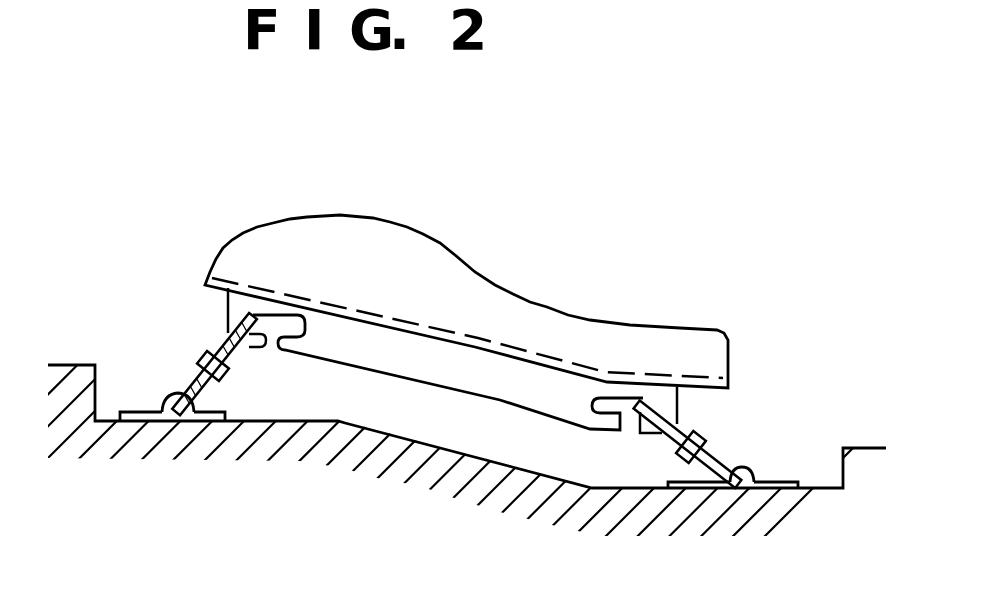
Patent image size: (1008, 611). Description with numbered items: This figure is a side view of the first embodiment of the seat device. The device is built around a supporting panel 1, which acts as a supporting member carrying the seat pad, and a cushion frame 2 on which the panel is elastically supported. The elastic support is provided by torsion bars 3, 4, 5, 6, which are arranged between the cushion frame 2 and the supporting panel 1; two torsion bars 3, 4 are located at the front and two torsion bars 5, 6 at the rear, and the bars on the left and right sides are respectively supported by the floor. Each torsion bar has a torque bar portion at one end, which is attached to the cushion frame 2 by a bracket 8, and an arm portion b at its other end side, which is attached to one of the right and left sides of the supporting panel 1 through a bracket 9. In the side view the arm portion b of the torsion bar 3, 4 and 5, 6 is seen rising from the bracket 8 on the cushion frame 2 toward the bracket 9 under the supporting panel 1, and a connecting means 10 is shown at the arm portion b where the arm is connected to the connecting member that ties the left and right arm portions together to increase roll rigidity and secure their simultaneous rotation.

The supporting panel 1 is at (293, 254).
The cushion frame 2 is at (430, 444).
The torsion bar 3 is at (727, 480).
The torsion bar 4 is at (775, 430).
The torsion bar 5 is at (190, 391).
The torsion bar 6 is at (145, 353).
The bracket 8 is at (163, 405).
The bracket 9 is at (340, 335).
The connecting means 10 is at (206, 353).
The arm portion b is at (226, 346).